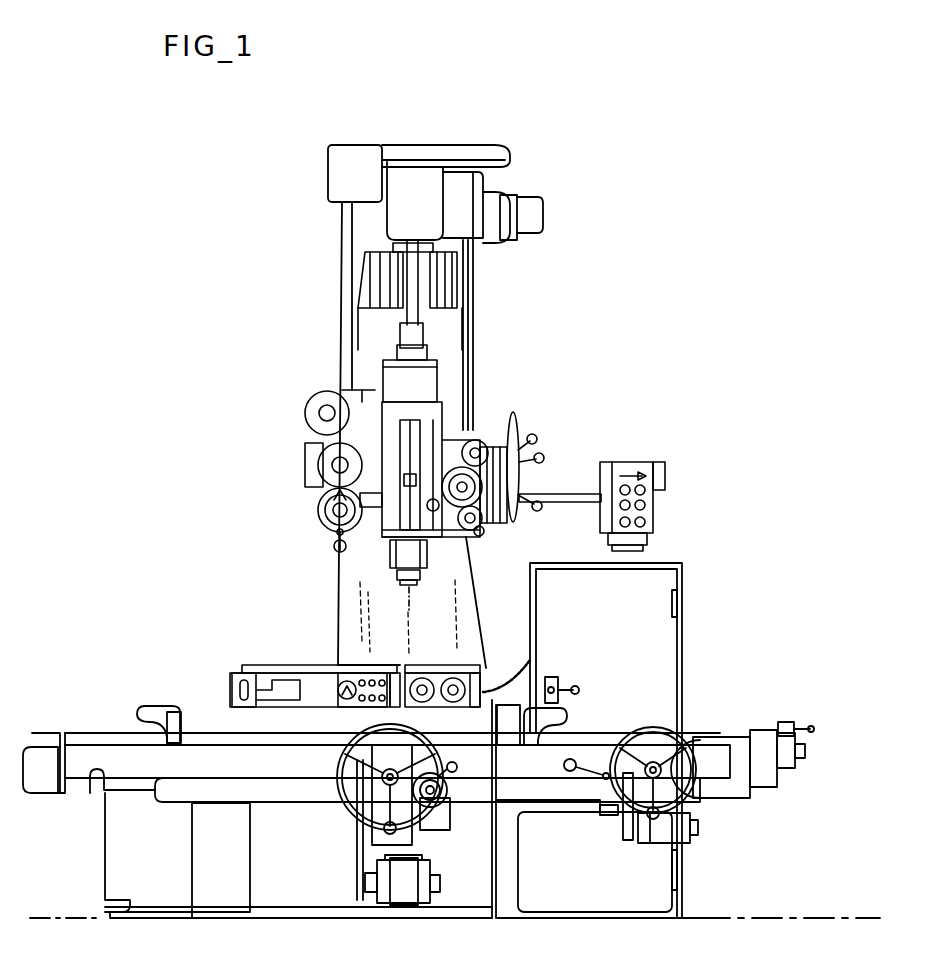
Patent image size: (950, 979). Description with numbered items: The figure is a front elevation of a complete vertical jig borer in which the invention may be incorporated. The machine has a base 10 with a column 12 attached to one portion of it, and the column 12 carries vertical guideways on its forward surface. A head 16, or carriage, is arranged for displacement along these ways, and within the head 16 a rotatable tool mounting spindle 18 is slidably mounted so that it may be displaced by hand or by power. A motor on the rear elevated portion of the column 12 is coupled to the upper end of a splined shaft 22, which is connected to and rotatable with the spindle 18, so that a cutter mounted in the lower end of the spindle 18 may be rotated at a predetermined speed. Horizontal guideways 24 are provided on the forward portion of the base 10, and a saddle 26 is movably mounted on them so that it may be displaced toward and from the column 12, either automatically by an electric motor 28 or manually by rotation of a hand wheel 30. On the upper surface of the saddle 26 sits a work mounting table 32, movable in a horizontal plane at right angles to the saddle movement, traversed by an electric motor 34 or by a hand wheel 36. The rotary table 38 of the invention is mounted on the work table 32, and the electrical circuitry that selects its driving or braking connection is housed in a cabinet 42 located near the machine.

The base 10 is at (560, 861).
The column 12 is at (347, 610).
The head 16 is at (388, 422).
The tool mounting spindle 18 is at (402, 552).
The splined shaft 22 is at (412, 313).
The horizontal guideways 24 is at (117, 784).
The saddle 26 is at (95, 752).
The electric motor 28 is at (403, 880).
The hand wheel 30 is at (358, 818).
The work mounting table 32 is at (474, 725).
The electric motor 34 is at (673, 835).
The hand wheel 36 is at (682, 740).
The rotary table 38 is at (262, 645).
The cabinet 42 is at (665, 641).